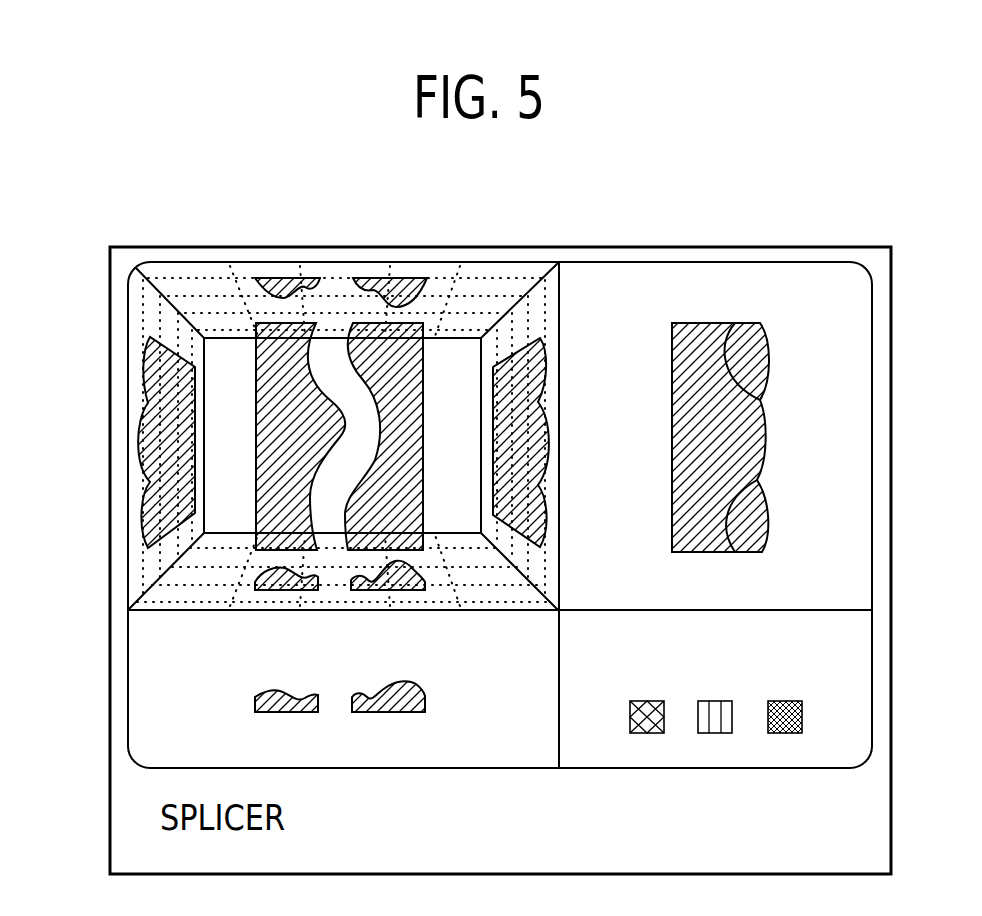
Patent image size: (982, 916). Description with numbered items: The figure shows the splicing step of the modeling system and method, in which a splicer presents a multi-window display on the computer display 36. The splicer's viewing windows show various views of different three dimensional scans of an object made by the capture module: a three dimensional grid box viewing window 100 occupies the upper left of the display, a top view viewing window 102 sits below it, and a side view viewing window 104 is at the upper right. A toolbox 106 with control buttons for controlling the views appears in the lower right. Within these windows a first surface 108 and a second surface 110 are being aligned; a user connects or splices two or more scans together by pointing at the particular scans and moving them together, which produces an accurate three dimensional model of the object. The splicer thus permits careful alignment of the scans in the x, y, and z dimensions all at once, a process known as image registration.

The computer display 36 is at (659, 247).
The three dimensional grid box viewing window 100 is at (143, 361).
The top view viewing window 102 is at (190, 755).
The side view viewing window 104 is at (848, 308).
The toolbox 106 is at (857, 755).
The first surface 108 is at (288, 278).
The second surface 110 is at (387, 278).